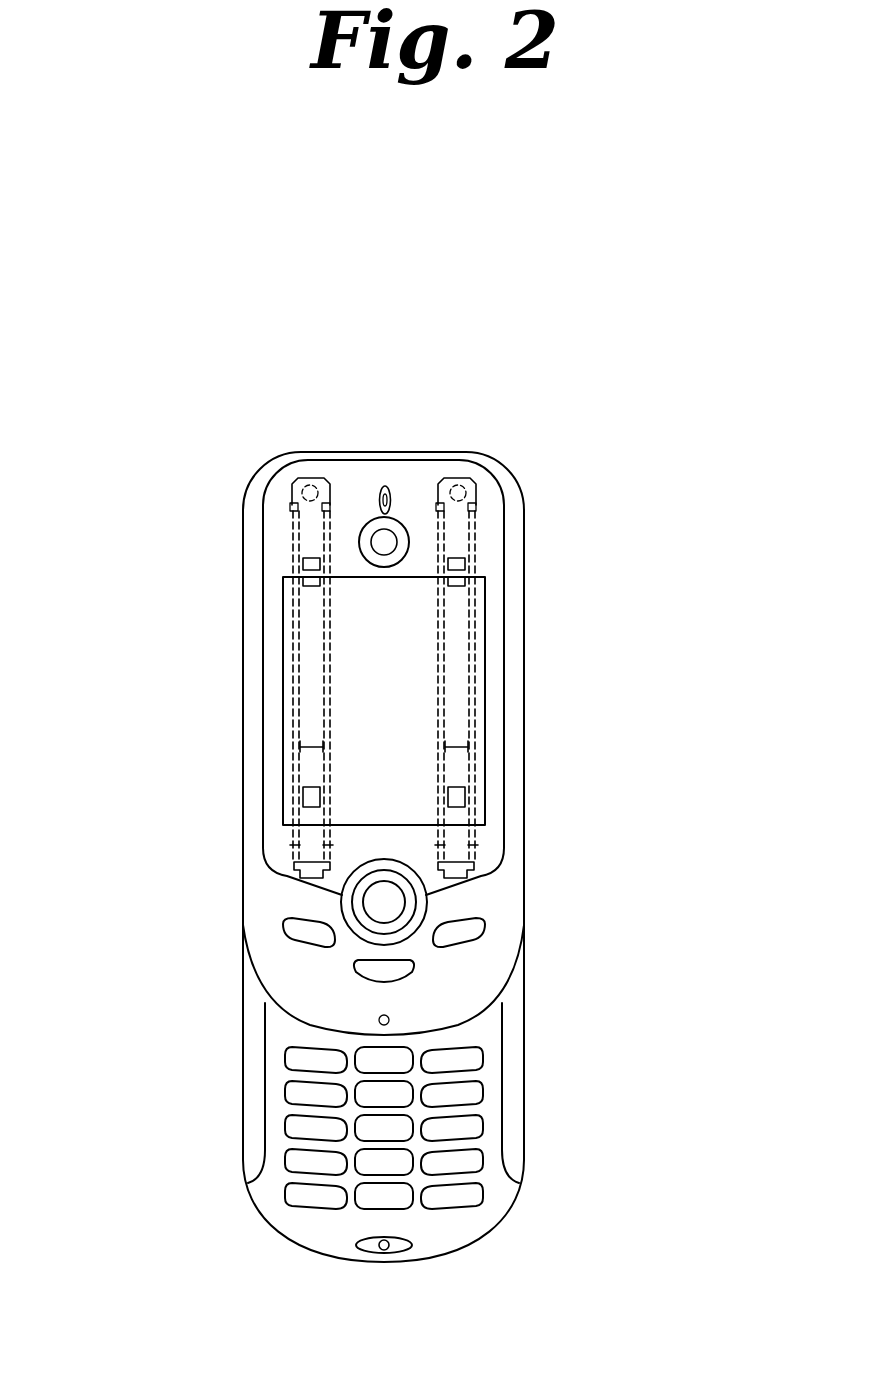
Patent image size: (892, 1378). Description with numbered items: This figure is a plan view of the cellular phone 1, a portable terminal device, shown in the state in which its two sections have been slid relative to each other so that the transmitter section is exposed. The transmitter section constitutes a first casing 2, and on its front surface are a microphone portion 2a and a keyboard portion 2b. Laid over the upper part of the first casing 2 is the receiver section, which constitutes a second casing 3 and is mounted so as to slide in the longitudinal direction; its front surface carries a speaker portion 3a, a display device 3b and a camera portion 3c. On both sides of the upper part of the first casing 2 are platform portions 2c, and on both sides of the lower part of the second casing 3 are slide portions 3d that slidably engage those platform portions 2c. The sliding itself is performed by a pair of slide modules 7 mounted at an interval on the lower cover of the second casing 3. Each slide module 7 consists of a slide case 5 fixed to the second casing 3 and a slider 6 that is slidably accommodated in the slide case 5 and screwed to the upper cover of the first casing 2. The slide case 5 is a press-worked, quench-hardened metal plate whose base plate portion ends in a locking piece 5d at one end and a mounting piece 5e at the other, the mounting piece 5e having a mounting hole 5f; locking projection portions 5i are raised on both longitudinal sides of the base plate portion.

The cellular phone 1 is at (543, 743).
The transmitter section (first casing) 2 is at (362, 1172).
The microphone portion 2a is at (394, 1250).
The keyboard portion 2b is at (318, 1197).
The platform portions 2c is at (258, 1107).
The receiver section (second casing) 3 is at (348, 684).
The speaker portion 3a is at (384, 486).
The display device 3b is at (406, 672).
The camera portion 3c is at (390, 522).
The slide portions 3d is at (255, 807).
The slide case 5 is at (305, 690).
The locking piece 5d is at (300, 882).
The mounting piece 5e is at (308, 480).
The mounting hole 5f is at (295, 470).
The locking projection portions 5i is at (300, 582).
The slider 6 is at (300, 778).
The slide module 7 is at (283, 830).